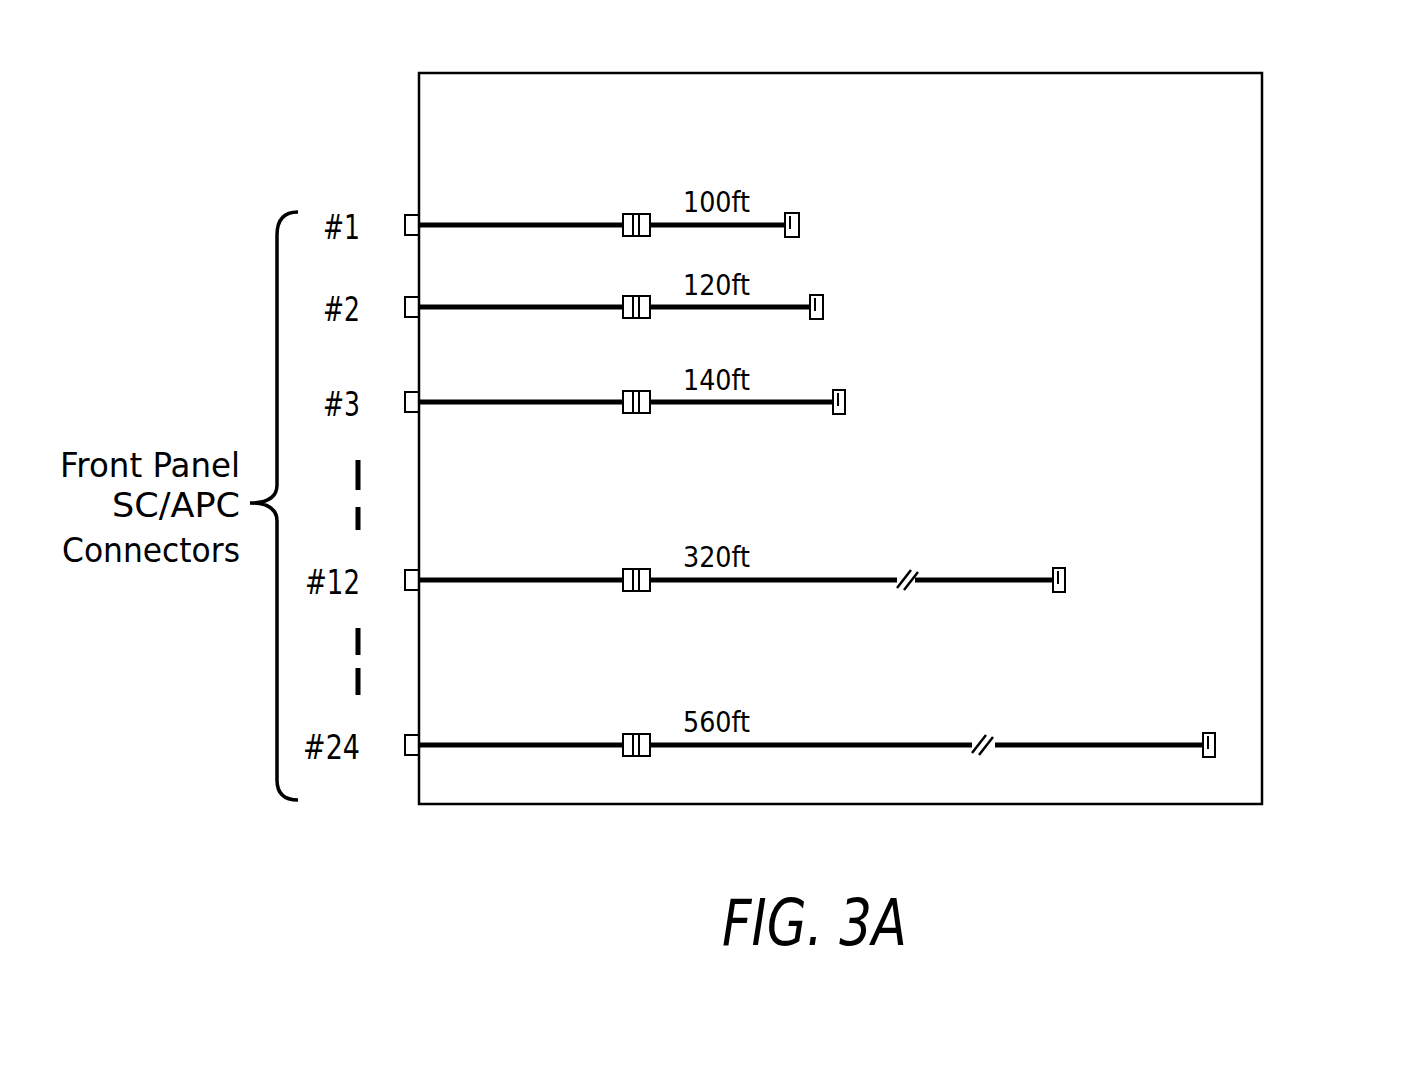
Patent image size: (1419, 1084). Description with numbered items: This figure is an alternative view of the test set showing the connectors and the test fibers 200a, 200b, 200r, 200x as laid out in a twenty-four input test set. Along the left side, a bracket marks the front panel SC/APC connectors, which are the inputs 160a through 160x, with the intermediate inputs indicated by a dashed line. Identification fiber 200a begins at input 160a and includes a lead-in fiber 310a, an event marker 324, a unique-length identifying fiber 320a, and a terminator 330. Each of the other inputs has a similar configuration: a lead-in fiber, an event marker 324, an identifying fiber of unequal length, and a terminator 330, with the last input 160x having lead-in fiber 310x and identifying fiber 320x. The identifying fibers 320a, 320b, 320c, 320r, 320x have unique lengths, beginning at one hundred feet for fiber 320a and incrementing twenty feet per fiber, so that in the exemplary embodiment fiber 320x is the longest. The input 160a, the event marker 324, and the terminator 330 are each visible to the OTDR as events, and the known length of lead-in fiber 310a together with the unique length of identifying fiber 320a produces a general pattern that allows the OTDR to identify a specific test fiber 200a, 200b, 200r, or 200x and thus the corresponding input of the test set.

The input 160a is at (405, 222).
The input 160x is at (404, 750).
The lead-in fiber 310a is at (442, 225).
The lead-in fiber 310x is at (440, 745).
The event marker 324 is at (582, 447).
The unique-length identifying fiber 320a is at (767, 223).
The unique-length identifying fiber 320b is at (783, 304).
The unique-length identifying fiber 320c is at (797, 406).
The unique-length identifying fiber 320r is at (792, 578).
The unique-length identifying fiber 320x is at (860, 745).
The terminator 330 is at (1000, 458).
The test fiber 200a is at (807, 226).
The test fiber 200b is at (831, 308).
The test fiber 200r is at (1073, 580).
The test fiber 200x is at (1225, 745).